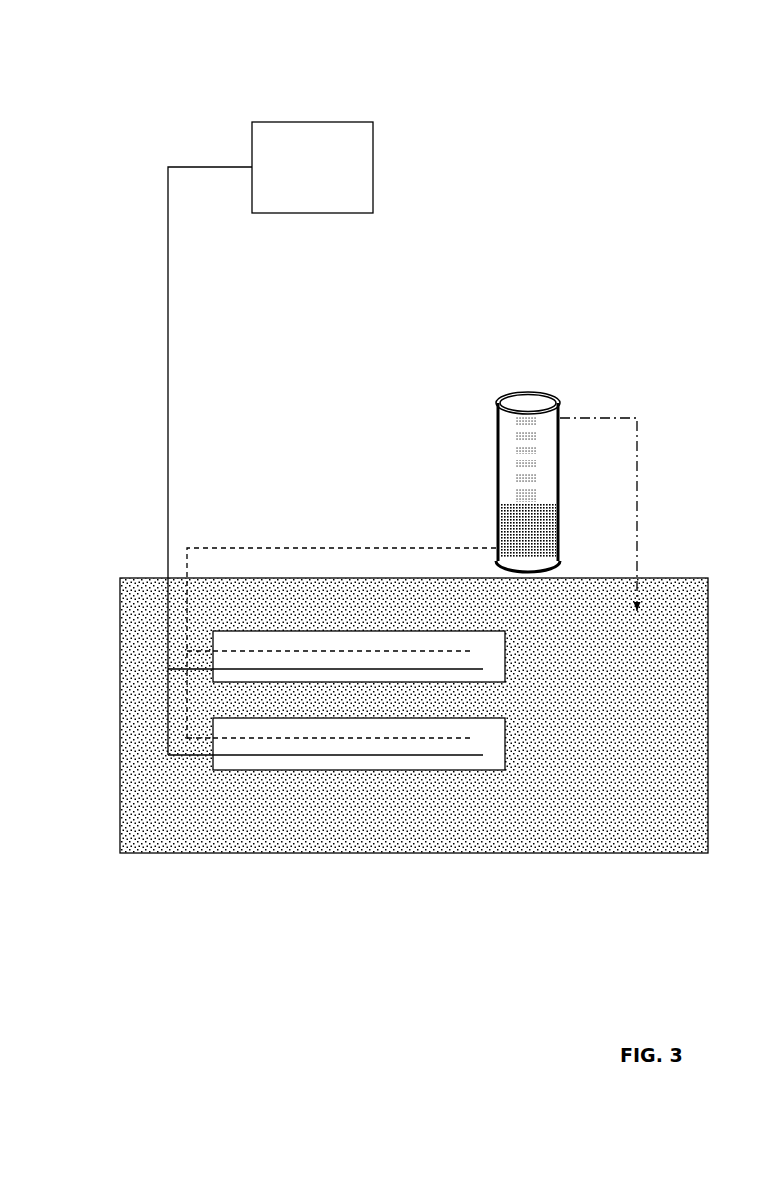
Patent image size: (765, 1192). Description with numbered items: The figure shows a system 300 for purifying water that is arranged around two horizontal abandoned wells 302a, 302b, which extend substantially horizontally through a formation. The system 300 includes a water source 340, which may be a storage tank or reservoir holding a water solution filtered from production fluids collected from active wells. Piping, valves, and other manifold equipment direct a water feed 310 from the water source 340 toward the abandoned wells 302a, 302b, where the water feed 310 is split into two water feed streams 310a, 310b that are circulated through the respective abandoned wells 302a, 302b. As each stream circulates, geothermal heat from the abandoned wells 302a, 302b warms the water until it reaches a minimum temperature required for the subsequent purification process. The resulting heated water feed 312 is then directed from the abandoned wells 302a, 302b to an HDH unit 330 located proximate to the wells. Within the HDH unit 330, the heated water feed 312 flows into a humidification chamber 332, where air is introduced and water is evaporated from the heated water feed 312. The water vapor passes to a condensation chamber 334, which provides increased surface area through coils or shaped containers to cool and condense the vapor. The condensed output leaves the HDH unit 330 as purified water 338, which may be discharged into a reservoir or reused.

The system 300 is at (155, 68).
The water source 340 is at (331, 182).
The water feed 310 is at (210, 461).
The water feed stream 310a is at (200, 759).
The water feed stream 310b is at (200, 676).
The heated water feed 312 is at (341, 632).
The abandoned well 302a is at (515, 744).
The abandoned well 302b is at (517, 653).
The HDH unit 330 is at (505, 373).
The humidification chamber 332 is at (517, 513).
The condensation chamber 334 is at (517, 437).
The purified water 338 is at (598, 499).